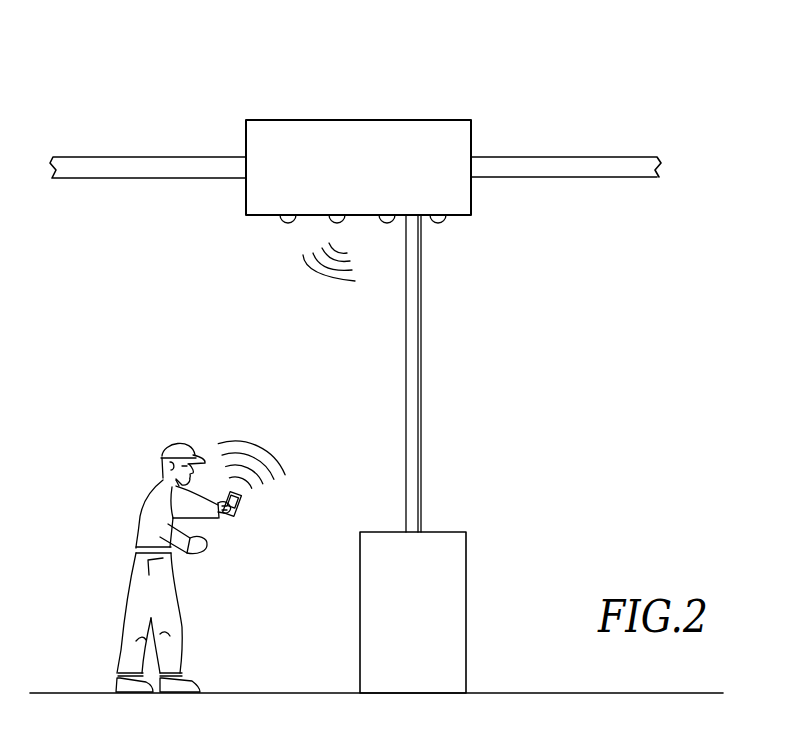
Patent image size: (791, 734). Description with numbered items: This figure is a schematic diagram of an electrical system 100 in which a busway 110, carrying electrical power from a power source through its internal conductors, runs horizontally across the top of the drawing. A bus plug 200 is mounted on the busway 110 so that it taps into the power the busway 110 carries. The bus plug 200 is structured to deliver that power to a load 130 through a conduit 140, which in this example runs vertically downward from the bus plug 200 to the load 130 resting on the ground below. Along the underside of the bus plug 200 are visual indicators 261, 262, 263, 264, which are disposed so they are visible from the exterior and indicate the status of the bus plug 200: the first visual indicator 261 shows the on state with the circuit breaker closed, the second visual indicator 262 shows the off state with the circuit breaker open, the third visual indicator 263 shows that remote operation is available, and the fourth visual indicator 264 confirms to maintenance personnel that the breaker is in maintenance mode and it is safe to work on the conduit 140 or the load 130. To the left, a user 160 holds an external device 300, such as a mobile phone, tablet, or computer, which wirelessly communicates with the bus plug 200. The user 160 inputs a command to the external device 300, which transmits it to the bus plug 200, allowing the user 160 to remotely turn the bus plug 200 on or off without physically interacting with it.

The electrical system 100 is at (86, 108).
The busway 110 is at (193, 157).
The bus plug 200 is at (385, 119).
The conduit 140 is at (421, 373).
The load 130 is at (466, 545).
The user 160 is at (134, 412).
The external device 300 is at (242, 542).
The first visual indicator 261 is at (390, 225).
The second visual indicator 262 is at (440, 225).
The third visual indicator 263 is at (327, 225).
The fourth visual indicator 264 is at (281, 226).